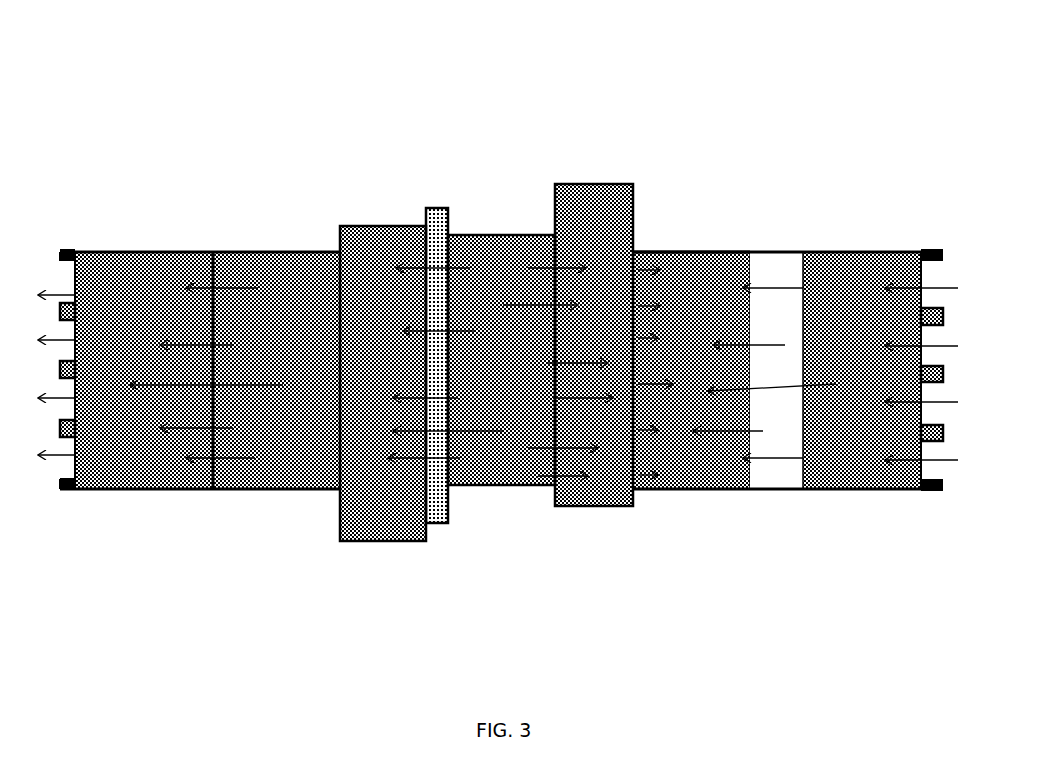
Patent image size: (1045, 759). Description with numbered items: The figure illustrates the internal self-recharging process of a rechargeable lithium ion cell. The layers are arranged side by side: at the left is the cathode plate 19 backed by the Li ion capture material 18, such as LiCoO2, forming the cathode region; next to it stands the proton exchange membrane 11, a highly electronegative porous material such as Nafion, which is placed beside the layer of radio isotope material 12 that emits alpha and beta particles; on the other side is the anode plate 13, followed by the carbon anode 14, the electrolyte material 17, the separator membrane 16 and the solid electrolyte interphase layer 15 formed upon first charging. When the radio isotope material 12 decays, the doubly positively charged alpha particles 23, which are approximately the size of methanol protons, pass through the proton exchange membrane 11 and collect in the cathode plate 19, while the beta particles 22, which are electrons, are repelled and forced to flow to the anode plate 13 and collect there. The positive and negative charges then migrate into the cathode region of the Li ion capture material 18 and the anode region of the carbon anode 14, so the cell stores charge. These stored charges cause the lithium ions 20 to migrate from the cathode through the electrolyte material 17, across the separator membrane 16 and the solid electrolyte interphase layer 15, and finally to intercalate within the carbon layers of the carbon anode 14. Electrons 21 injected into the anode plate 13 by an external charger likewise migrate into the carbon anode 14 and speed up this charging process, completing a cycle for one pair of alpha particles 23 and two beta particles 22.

The proton exchange membrane 11 is at (380, 70).
The radio isotope material 12 is at (415, 618).
The anode plate 13 is at (575, 582).
The carbon anode 14 is at (682, 585).
The solid electrolyte interphase layer 15 is at (717, 630).
The separator membrane 16 is at (922, 535).
The electrolyte material 17 is at (138, 503).
The Li ion capture material 18 is at (204, 157).
The cathode plate 19 is at (310, 112).
The lithium ions 20 is at (772, 193).
The electrons 21 is at (657, 137).
The beta particles 22 is at (640, 90).
The alpha particles 23 is at (541, 45).